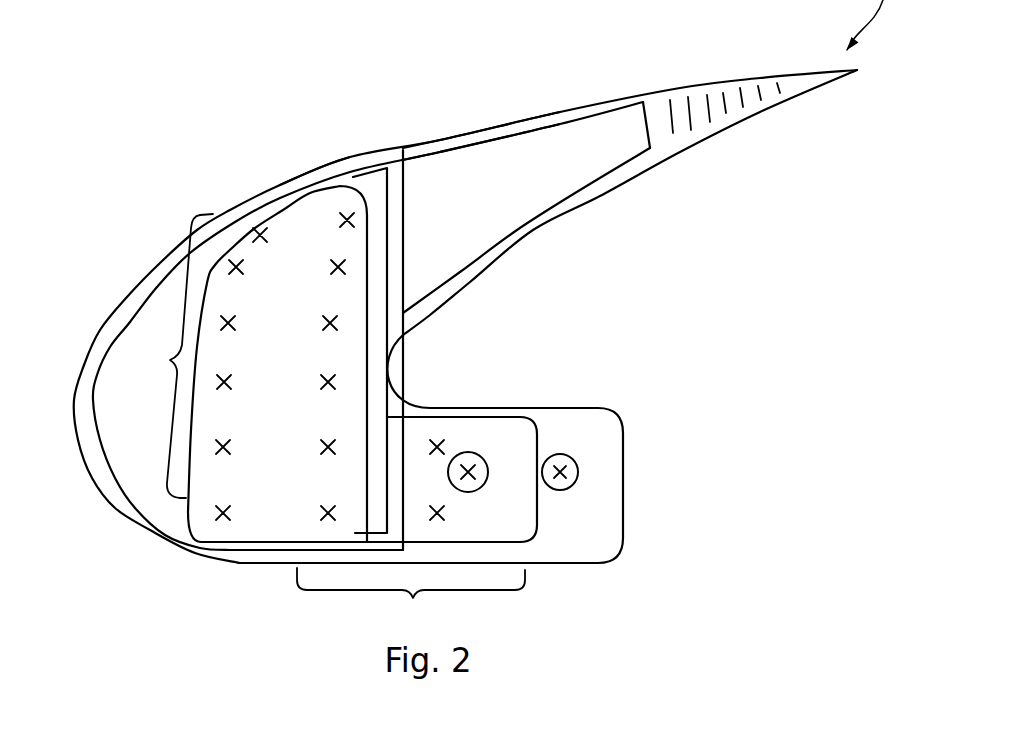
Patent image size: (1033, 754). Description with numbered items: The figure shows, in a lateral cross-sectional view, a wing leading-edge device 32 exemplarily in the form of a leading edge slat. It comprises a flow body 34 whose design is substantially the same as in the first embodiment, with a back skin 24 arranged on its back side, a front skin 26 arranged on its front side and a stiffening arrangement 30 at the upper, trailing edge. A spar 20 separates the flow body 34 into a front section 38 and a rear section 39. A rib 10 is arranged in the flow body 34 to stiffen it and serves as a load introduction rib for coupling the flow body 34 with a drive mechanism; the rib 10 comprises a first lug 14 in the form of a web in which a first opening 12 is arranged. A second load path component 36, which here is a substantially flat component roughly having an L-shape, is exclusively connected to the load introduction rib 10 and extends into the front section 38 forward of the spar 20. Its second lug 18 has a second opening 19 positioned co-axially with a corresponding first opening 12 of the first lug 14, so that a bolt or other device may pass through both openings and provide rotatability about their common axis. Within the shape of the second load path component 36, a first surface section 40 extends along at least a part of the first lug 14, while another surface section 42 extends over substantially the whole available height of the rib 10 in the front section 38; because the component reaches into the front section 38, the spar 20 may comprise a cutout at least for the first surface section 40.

The rib 10 is at (108, 423).
The first opening 12 is at (445, 390).
The first lug 14 is at (573, 420).
The second lug 18 is at (518, 525).
The second opening 19 is at (470, 458).
The spar 20 is at (404, 223).
The back skin 24 is at (557, 213).
The front skin 26 is at (448, 110).
The stiffening arrangement 30 is at (725, 97).
The wing leading-edge device 32 is at (247, 143).
The flow body 34 is at (317, 167).
The second load path component 36 is at (460, 427).
The front section 38 is at (152, 315).
The rear section 39 is at (478, 148).
The first surface section 40 is at (411, 601).
The surface section 42 is at (173, 356).